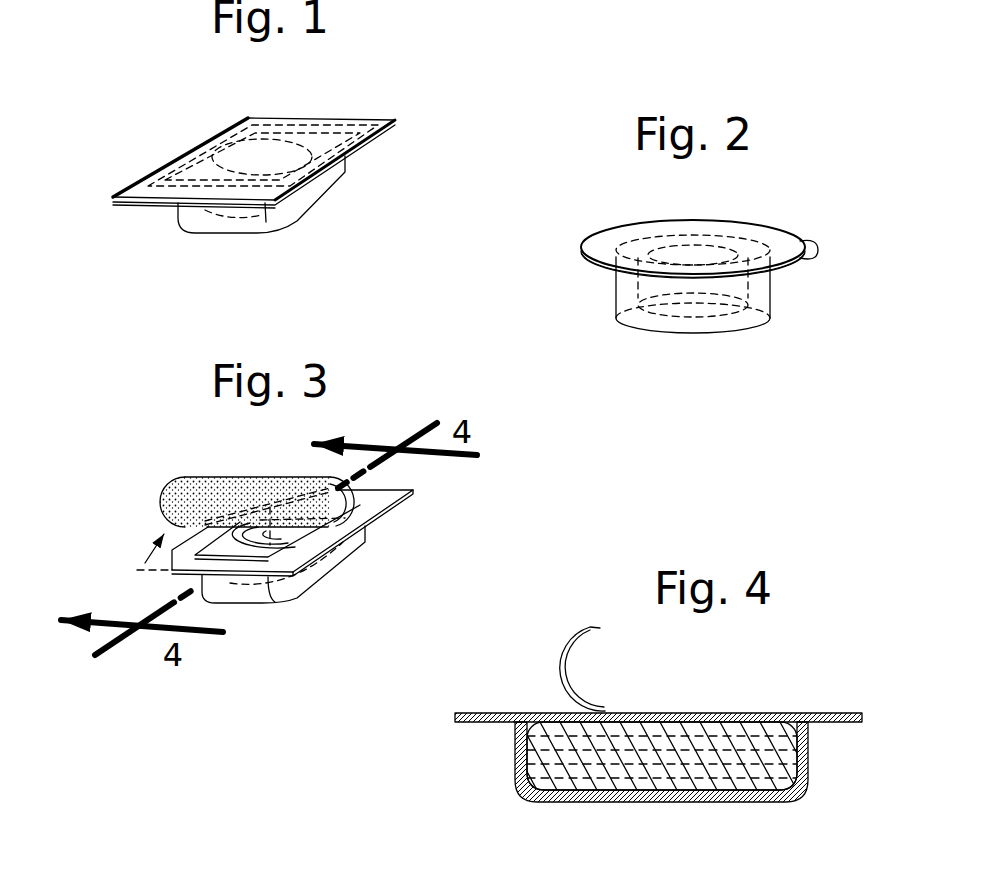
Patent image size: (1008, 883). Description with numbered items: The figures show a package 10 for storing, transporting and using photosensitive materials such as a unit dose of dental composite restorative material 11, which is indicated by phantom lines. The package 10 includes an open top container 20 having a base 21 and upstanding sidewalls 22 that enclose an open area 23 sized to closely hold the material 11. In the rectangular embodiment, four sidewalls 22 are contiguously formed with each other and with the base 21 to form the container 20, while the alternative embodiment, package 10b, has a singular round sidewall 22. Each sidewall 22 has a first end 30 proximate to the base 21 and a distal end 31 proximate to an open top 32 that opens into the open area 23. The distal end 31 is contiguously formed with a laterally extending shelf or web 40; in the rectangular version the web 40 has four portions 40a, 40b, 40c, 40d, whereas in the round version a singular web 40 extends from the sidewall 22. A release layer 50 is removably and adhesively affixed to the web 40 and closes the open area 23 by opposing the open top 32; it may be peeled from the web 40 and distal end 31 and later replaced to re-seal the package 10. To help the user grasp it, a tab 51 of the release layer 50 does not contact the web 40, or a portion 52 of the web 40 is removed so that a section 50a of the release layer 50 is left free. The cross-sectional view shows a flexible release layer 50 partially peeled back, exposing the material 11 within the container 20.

In FIG. 1, the package 10 is at (396, 58).
In FIG. 3, the package 10 is at (148, 456).
In FIG. 4, the package 10 is at (476, 758).
In FIG. 2, the package 10b is at (832, 245).
In FIG. 1, the material 11 is at (333, 193).
In FIG. 2, the material 11 is at (697, 310).
In FIG. 3, the material 11 is at (270, 548).
In FIG. 4, the material 11 is at (652, 740).
In FIG. 1, the open top container 20 is at (372, 193).
In FIG. 2, the open top container 20 is at (777, 305).
In FIG. 3, the open top container 20 is at (377, 540).
In FIG. 4, the open top container 20 is at (823, 769).
In FIG. 1, the base 21 is at (242, 233).
In FIG. 3, the base 21 is at (348, 570).
In FIG. 4, the base 21 is at (657, 803).
In FIG. 1, the sidewall 22 is at (237, 137).
In FIG. 3, the sidewall 22 is at (375, 535).
In FIG. 4, the sidewall 22 is at (515, 770).
In FIG. 1, the open area 23 is at (283, 143).
In FIG. 2, the open area 23 is at (607, 290).
In FIG. 3, the open area 23 is at (203, 557).
In FIG. 4, the open area 23 is at (785, 728).
In FIG. 4, the first end 30 is at (810, 790).
In FIG. 4, the distal end 31 is at (812, 730).
In FIG. 1, the open top 32 is at (380, 140).
In FIG. 2, the open top 32 is at (590, 244).
In FIG. 3, the open top 32 is at (330, 560).
In FIG. 4, the open top 32 is at (530, 713).
In FIG. 2, the web 40 is at (590, 268).
In FIG. 1, the web portion 40a is at (213, 205).
In FIG. 1, the web portion 40b is at (350, 143).
In FIG. 1, the web portion 40c is at (267, 120).
In FIG. 1, the web portion 40d is at (190, 148).
In FIG. 1, the release layer 50 is at (130, 188).
In FIG. 2, the release layer 50 is at (628, 222).
In FIG. 3, the release layer 50 is at (230, 477).
In FIG. 4, the release layer 50 is at (557, 638).
In FIG. 1, the section 50a is at (157, 163).
In FIG. 3, the section 50a is at (138, 560).
In FIG. 2, the tab 51 is at (806, 242).
In FIG. 1, the portion 52 is at (153, 202).
In FIG. 3, the portion 52 is at (173, 573).